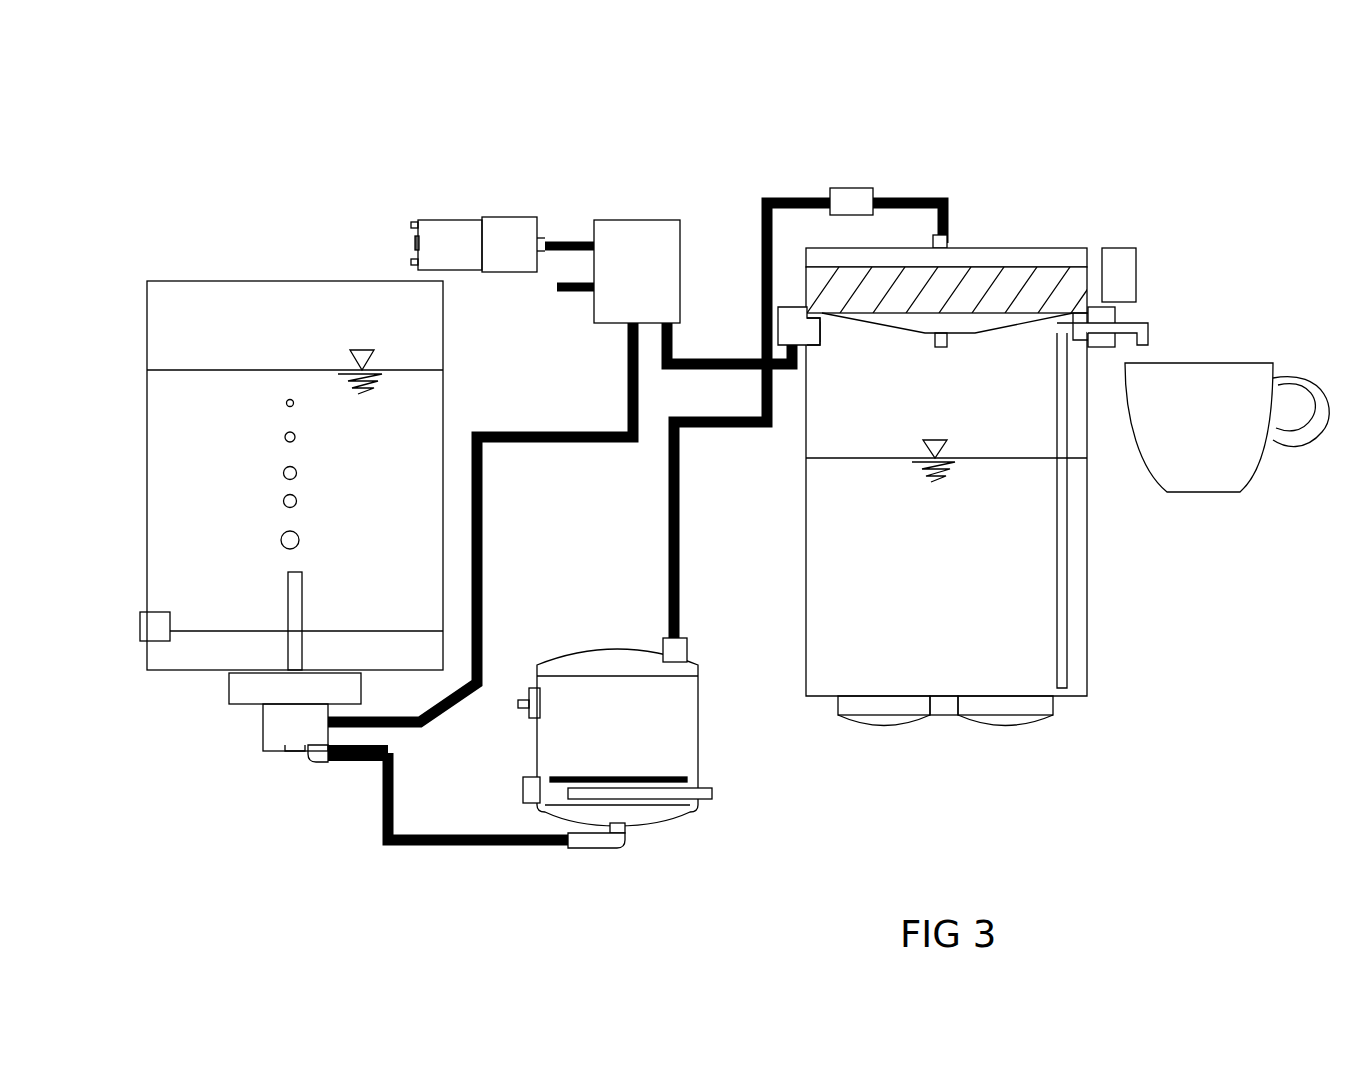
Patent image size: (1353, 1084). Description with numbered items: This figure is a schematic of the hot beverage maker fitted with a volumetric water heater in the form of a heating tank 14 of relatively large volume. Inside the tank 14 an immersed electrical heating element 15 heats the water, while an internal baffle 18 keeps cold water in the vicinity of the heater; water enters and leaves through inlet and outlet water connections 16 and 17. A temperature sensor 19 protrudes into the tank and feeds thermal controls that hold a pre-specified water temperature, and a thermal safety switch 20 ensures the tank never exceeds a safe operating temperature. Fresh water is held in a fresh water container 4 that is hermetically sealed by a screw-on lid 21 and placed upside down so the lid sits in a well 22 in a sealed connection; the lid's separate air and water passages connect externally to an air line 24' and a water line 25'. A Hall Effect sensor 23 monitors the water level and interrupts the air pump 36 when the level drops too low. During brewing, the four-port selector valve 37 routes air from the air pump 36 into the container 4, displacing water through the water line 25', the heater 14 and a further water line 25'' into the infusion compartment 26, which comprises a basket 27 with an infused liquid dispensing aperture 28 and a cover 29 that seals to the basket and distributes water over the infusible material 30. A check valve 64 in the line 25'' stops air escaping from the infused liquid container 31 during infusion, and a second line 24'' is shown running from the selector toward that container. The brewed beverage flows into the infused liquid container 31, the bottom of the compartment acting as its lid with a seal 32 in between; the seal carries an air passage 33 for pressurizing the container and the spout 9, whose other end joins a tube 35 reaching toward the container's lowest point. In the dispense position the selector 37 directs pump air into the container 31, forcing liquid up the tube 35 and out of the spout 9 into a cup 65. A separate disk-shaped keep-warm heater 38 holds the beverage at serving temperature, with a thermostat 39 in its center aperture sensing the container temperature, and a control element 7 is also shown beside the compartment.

The fresh water container 4 is at (285, 326).
The control switch 7 is at (1122, 277).
The spout 9 is at (1145, 330).
The heating tank 14 is at (607, 729).
The electrical heating element 15 is at (683, 791).
The inlet water connection 16 is at (590, 848).
The outlet water connection 17 is at (688, 638).
The internal baffle 18 is at (678, 776).
The temperature sensor 19 is at (517, 705).
The thermal safety switch 20 is at (530, 790).
The screw-on lid 21 is at (240, 689).
The well 22 is at (280, 728).
The Hall Effect sensor 23 is at (142, 618).
The air line 24' is at (480, 484).
The water supply line to brew chamber 24'' is at (741, 343).
The water line 25' is at (441, 798).
The water line 25'' is at (773, 420).
The infusion compartment 26 is at (852, 287).
The basket 27 is at (805, 283).
The infused liquid dispensing aperture 28 is at (940, 347).
The cover 29 is at (978, 254).
The infusible material 30 is at (1012, 283).
The infused liquid container 31 is at (994, 575).
The seal 32 is at (785, 314).
The air passage 33 is at (803, 318).
The tube 35 is at (1060, 622).
The air pump 36 is at (463, 220).
The selector valve 37 is at (628, 220).
The keep-warm heater 38 is at (1027, 718).
The thermostat 39 is at (938, 718).
The check valve 64 is at (851, 200).
The cup 65 is at (1231, 408).